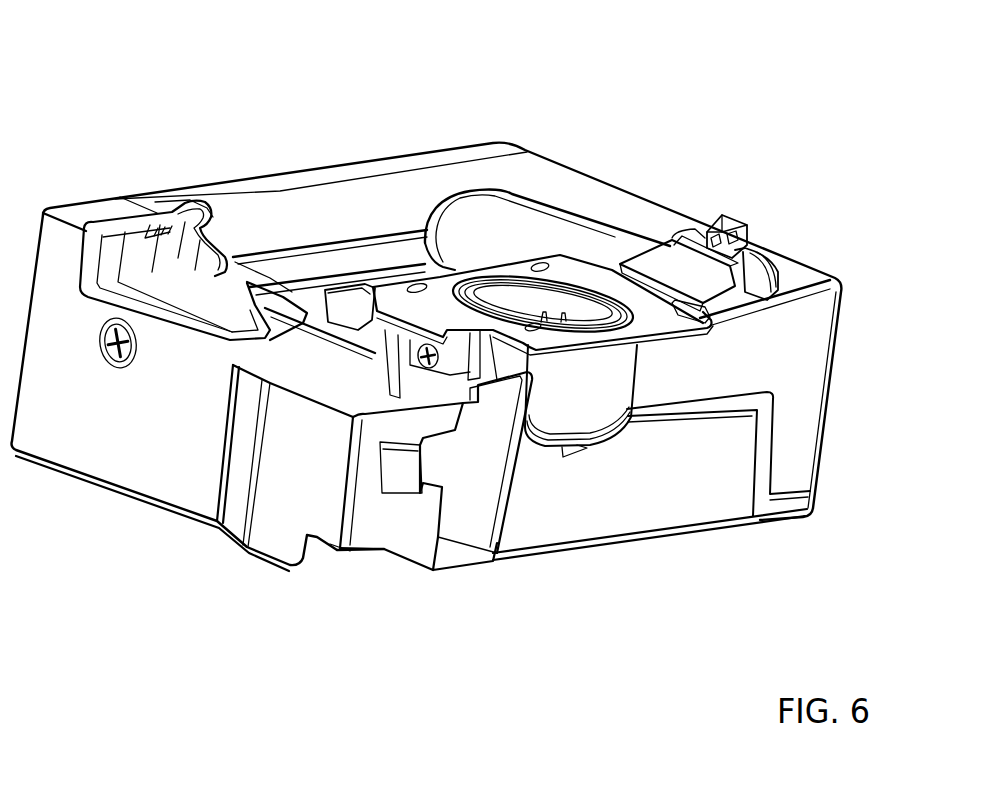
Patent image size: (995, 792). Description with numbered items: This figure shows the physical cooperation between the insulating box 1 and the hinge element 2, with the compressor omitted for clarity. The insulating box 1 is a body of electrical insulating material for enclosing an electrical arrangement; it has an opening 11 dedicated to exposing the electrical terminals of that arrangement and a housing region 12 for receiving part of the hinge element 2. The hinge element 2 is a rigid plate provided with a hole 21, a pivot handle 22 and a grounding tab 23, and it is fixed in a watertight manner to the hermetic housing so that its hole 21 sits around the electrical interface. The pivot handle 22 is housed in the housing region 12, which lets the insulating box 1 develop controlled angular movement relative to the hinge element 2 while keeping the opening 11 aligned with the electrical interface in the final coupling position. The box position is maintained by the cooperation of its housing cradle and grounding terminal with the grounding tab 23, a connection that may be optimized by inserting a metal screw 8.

The insulating box 1 is at (273, 210).
The hinge element 2 is at (668, 320).
The metal screw 8 is at (420, 352).
The opening 11 is at (513, 300).
The housing region 12 is at (757, 253).
The hole 21 is at (607, 290).
The pivot handle 22 is at (688, 268).
The grounding tab 23 is at (450, 367).